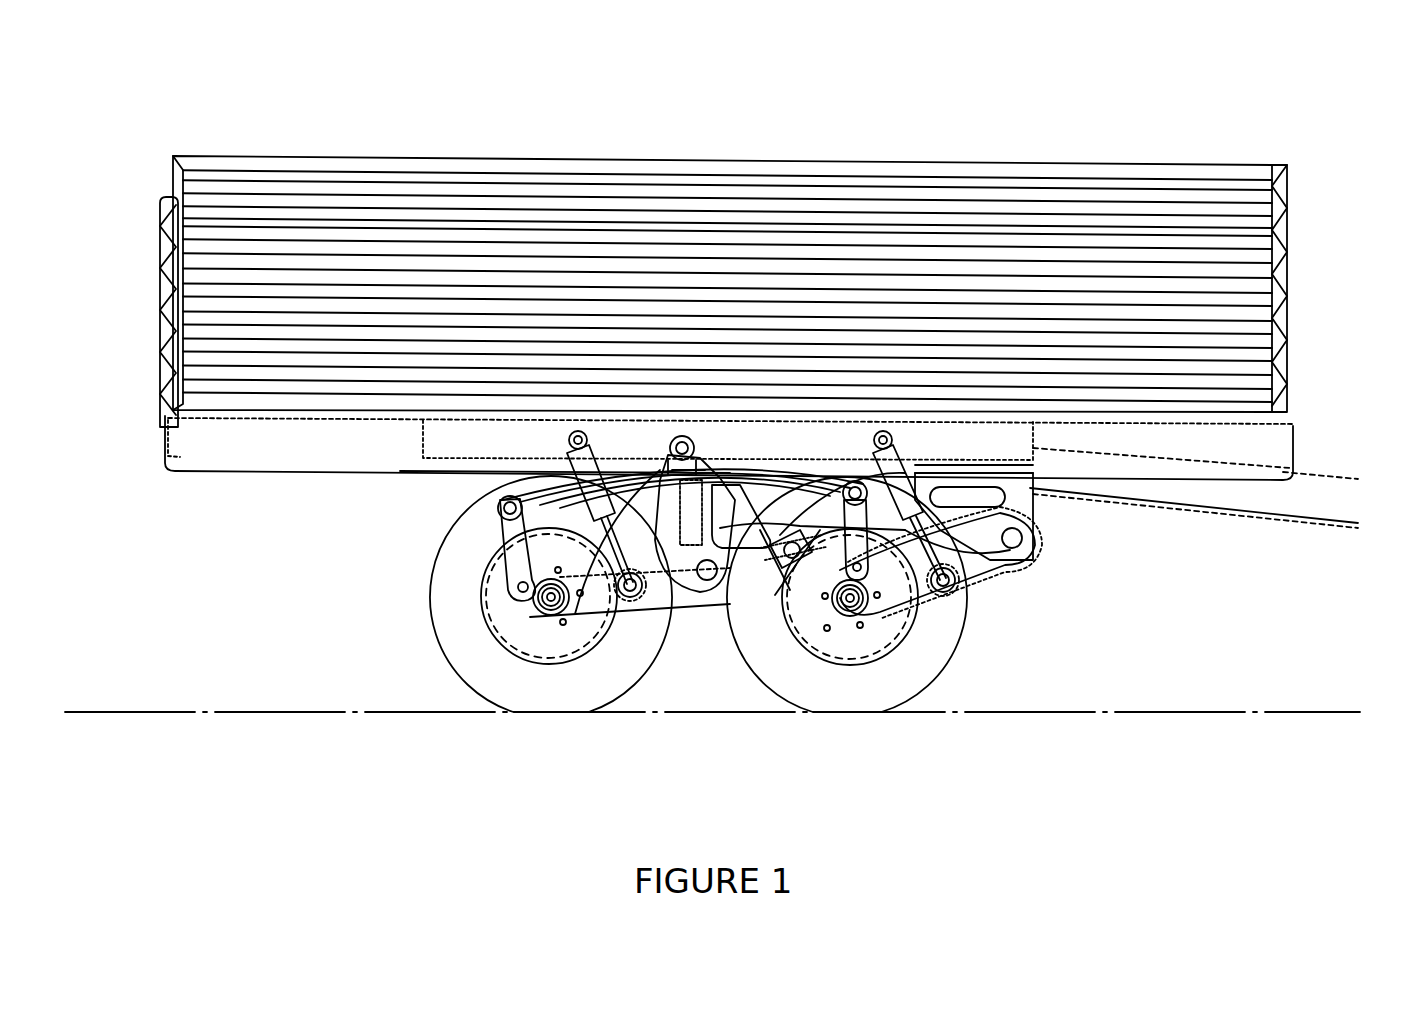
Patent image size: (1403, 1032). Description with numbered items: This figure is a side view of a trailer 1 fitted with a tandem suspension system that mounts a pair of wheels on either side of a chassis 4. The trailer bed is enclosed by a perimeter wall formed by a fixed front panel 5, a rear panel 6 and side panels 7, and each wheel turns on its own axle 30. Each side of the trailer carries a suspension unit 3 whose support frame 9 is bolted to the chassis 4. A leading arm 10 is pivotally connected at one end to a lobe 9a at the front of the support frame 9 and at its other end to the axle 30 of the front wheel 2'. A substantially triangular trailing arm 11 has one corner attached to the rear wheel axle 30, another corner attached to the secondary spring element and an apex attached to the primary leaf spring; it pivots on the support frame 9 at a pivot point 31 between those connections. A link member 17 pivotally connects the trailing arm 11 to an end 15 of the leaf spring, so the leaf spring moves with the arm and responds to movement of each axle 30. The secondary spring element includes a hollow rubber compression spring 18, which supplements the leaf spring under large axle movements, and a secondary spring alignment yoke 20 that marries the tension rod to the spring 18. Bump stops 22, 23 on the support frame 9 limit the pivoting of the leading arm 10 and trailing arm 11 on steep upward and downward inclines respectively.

The trailer 1 is at (960, 130).
The front wheel 2' is at (873, 611).
The suspension unit 3 is at (420, 497).
The chassis 4 is at (213, 452).
The front panel 5 is at (1282, 254).
The rear panel 6 is at (165, 255).
The side panel 7 is at (651, 205).
The support frame 9 is at (1020, 498).
The lobe 9a is at (1020, 553).
The leading arm 10 is at (985, 570).
The trailing arm 11 is at (680, 615).
The end of primary spring element 15 is at (500, 508).
The link member 17 is at (600, 510).
The hollow rubber compression spring 18 is at (790, 560).
The secondary spring alignment yoke 20 is at (800, 600).
The bump stop 22 is at (918, 620).
The bump stop 23 is at (655, 545).
The axle 30 is at (550, 620).
The pivot point 31 is at (704, 582).